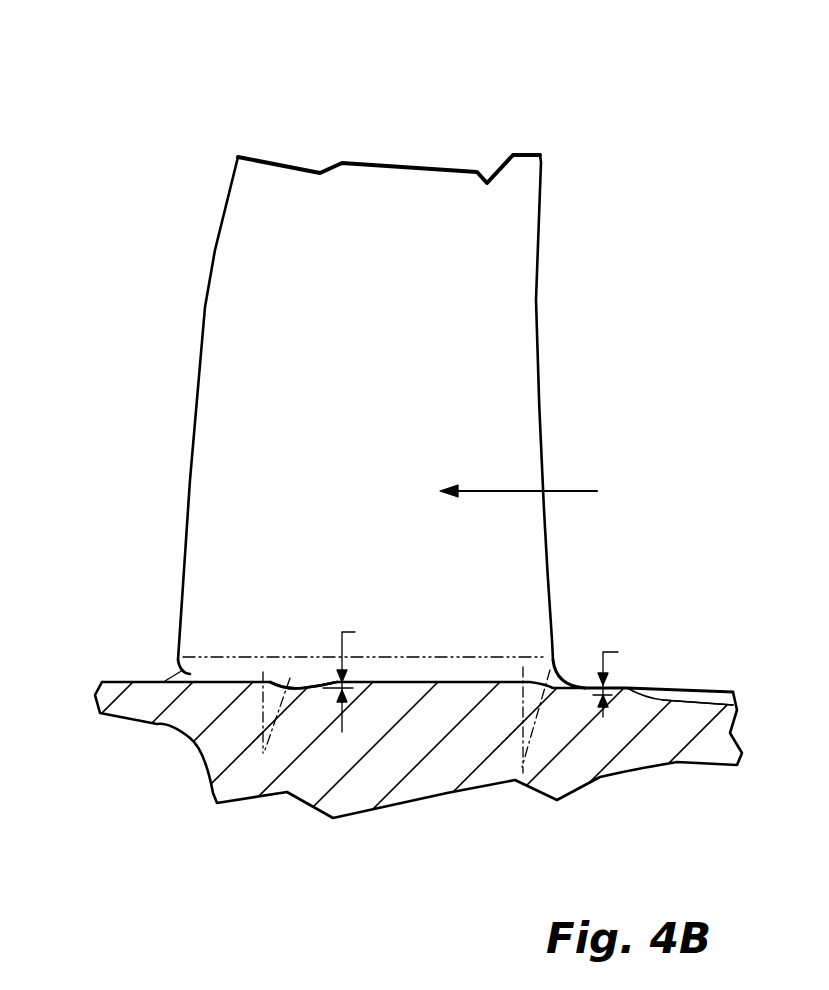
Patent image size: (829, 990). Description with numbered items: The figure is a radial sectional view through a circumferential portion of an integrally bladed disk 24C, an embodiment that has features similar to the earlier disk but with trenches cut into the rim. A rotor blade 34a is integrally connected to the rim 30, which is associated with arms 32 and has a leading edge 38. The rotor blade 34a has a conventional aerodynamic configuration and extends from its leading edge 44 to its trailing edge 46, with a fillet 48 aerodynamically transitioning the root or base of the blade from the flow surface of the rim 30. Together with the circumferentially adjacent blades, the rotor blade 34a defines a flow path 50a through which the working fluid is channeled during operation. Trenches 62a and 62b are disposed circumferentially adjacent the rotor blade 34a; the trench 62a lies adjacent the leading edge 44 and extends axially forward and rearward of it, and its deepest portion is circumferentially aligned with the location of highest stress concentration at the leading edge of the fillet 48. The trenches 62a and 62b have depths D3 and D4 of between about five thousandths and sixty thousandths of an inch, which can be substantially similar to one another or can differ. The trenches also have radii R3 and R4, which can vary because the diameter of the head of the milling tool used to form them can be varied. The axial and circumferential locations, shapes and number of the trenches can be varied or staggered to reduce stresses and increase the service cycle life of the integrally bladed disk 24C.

The integrally bladed disk 24C is at (346, 398).
The rotor blade 34a is at (407, 163).
The trailing edge 46 is at (205, 307).
The leading edge 44 is at (540, 400).
The fillet 48 is at (181, 668).
The flow path 50a is at (553, 488).
The trench 62a is at (569, 660).
The trench 62b is at (302, 676).
The rim 30 is at (380, 736).
The arm 32 is at (707, 700).
The leading edge 38 is at (640, 686).
The depth D3 is at (620, 682).
The depth D4 is at (353, 680).
The radius R3 is at (530, 692).
The radius R4 is at (270, 690).